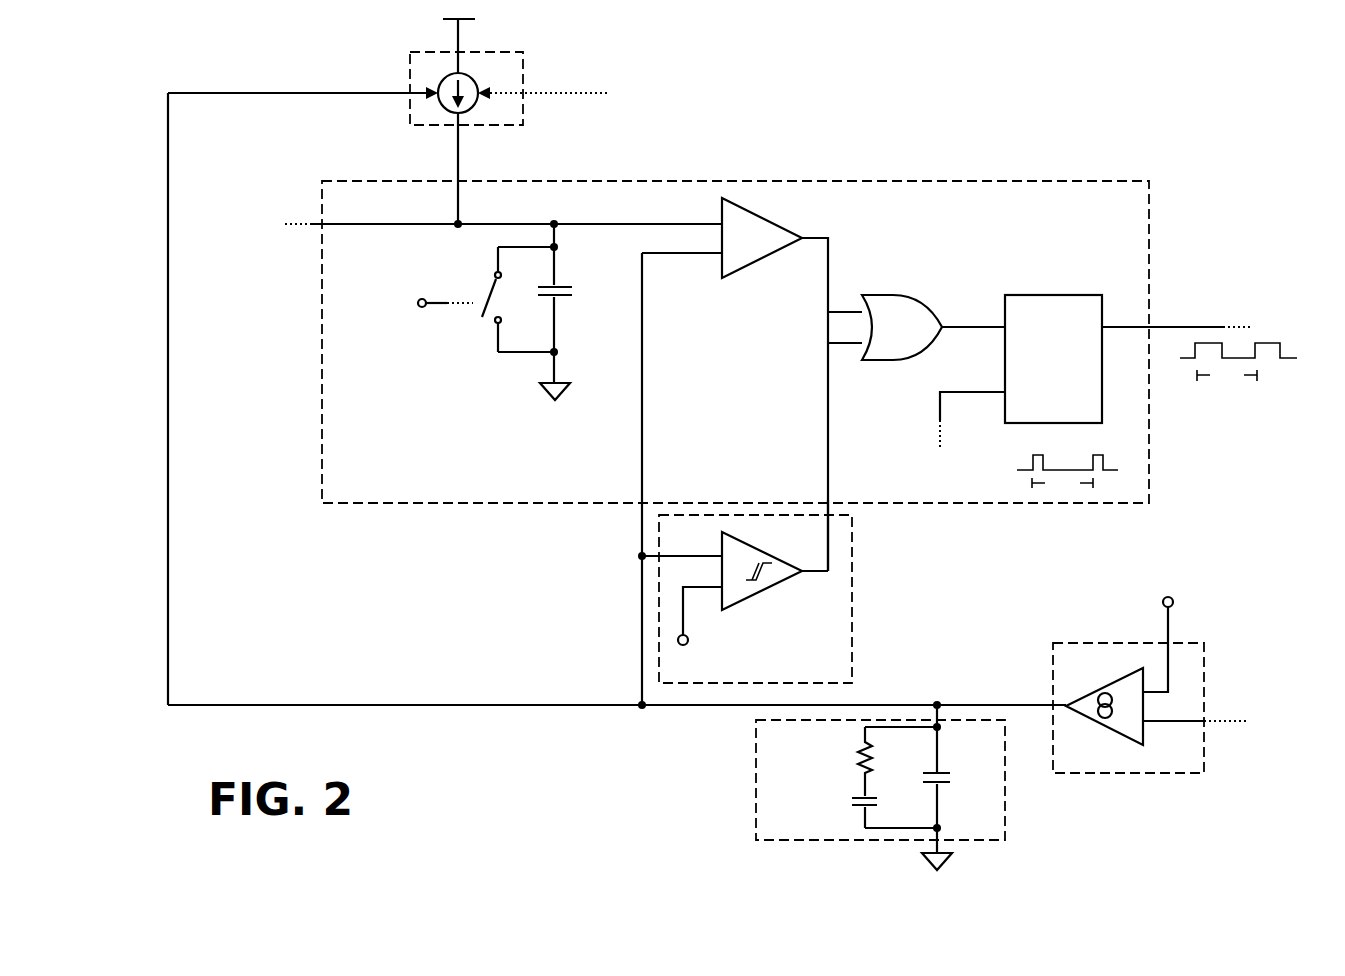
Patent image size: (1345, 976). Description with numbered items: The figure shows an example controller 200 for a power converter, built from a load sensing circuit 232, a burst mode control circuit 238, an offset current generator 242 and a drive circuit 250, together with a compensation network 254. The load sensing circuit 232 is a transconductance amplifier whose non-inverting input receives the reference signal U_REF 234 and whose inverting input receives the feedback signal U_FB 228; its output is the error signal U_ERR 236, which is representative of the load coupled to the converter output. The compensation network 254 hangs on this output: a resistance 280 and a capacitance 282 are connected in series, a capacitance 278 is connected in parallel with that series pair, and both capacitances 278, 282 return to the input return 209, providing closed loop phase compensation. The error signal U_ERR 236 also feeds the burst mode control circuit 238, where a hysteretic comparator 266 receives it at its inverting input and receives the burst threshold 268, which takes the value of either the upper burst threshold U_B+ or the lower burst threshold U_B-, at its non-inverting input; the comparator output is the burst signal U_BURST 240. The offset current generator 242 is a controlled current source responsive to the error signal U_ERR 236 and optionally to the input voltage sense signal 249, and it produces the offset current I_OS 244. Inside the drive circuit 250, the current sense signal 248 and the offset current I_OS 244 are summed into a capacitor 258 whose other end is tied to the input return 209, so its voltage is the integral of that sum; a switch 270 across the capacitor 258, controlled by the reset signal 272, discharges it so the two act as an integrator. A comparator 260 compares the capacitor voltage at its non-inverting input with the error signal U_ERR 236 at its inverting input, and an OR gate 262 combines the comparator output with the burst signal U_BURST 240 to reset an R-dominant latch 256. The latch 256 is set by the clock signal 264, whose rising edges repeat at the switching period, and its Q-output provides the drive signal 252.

The controller 200 is at (1208, 87).
The input return 209 is at (545, 398).
The feedback signal U_FB 228 is at (1270, 700).
The load sensing circuit 232 is at (1078, 640).
The reference signal U_REF 234 is at (1190, 560).
The error signal U_ERR 236 is at (332, 56).
The burst mode control circuit 238 is at (860, 568).
The burst signal U_BURST 240 is at (768, 405).
The offset current generator 242 is at (505, 52).
The offset current I_OS 244 is at (500, 158).
The current sense signal 248 is at (233, 192).
The input voltage sense signal 249 is at (635, 57).
The drive circuit 250 is at (1130, 180).
The drive signal 252 is at (1258, 268).
The compensation network 254 is at (748, 832).
The latch 256 is at (1035, 291).
The capacitor 258 is at (570, 282).
The comparator 260 is at (775, 222).
The OR gate 262 is at (895, 292).
The clock signal 264 is at (910, 448).
The comparator 266 is at (790, 582).
The burst threshold 268 is at (767, 658).
The switch 270 is at (490, 283).
The reset signal 272 is at (388, 328).
The capacitance 278 is at (935, 770).
The resistance 280 is at (850, 760).
The capacitance 282 is at (838, 800).